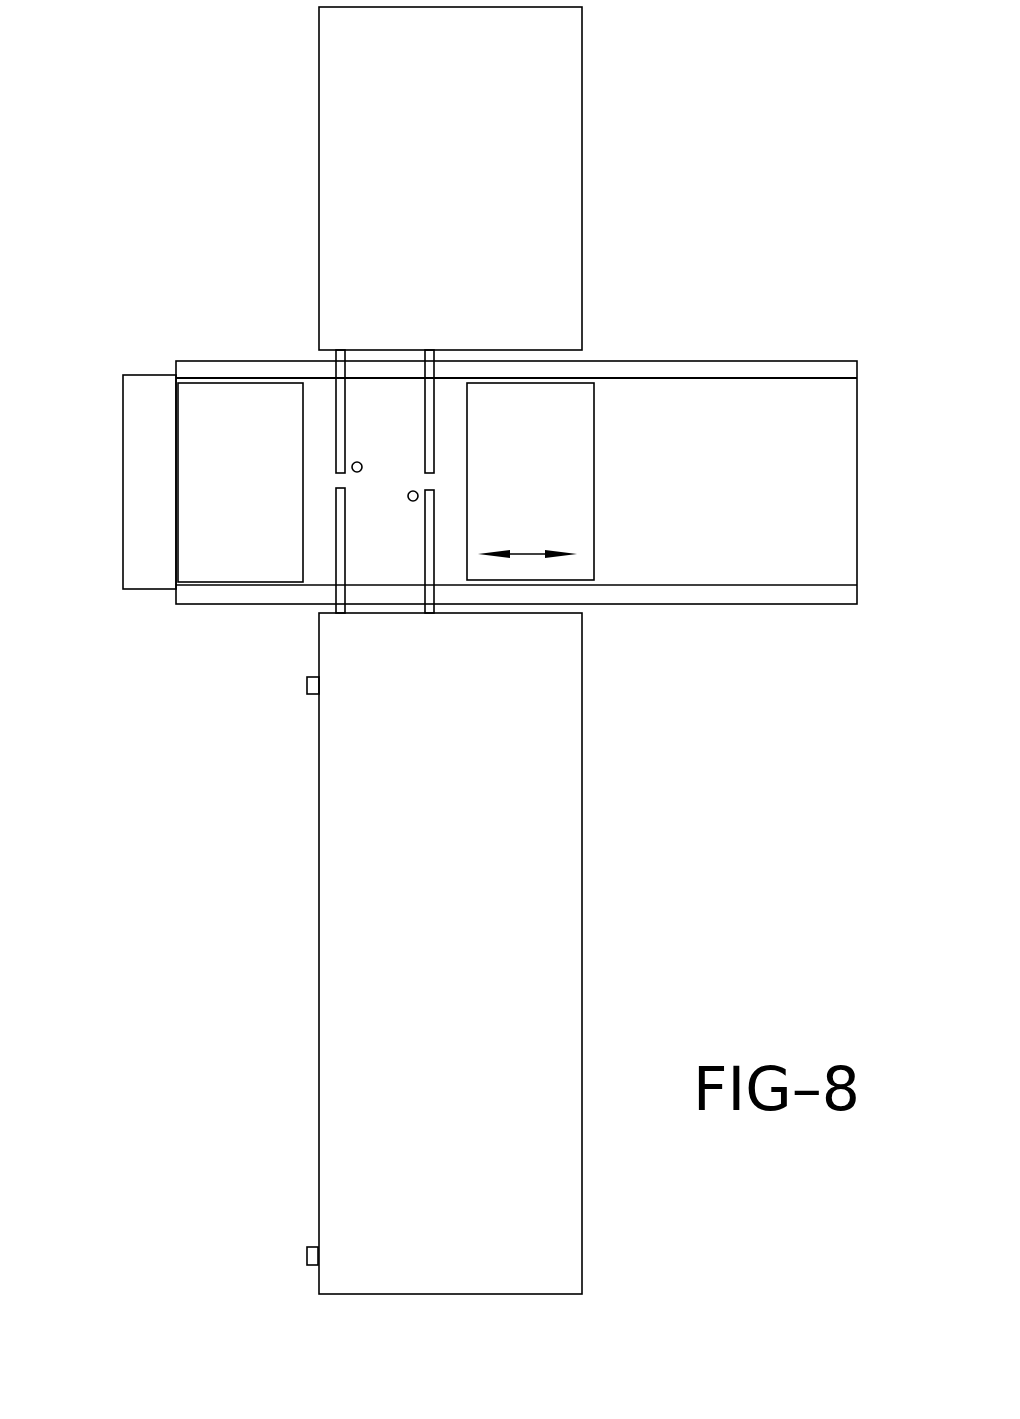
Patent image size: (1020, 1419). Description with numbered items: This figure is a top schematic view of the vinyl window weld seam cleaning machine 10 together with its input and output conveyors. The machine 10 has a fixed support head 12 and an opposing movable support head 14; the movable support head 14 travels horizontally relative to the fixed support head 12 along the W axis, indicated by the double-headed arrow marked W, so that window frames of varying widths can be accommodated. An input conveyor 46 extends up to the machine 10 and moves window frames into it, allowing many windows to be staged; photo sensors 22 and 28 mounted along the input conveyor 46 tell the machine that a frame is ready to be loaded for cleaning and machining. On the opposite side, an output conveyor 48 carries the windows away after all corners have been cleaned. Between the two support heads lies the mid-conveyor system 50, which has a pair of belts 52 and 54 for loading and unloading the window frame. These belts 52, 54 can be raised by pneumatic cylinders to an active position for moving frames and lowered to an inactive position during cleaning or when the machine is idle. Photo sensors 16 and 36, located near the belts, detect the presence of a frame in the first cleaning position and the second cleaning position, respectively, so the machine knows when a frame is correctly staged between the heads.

The vinyl window weld seam cleaning machine 10 is at (163, 277).
The fixed support head 12 is at (176, 435).
The movable support head 14 is at (594, 412).
The photo sensor 16 is at (418, 493).
The photo sensor 22 is at (305, 686).
The photo sensor 28 is at (307, 1253).
The photo sensor 36 is at (353, 463).
The input conveyor 46 is at (582, 920).
The output conveyor 48 is at (318, 146).
The mid-conveyor system 50 is at (425, 405).
The belt 52 is at (335, 543).
The belt 54 is at (425, 555).
The W axis W is at (527, 553).